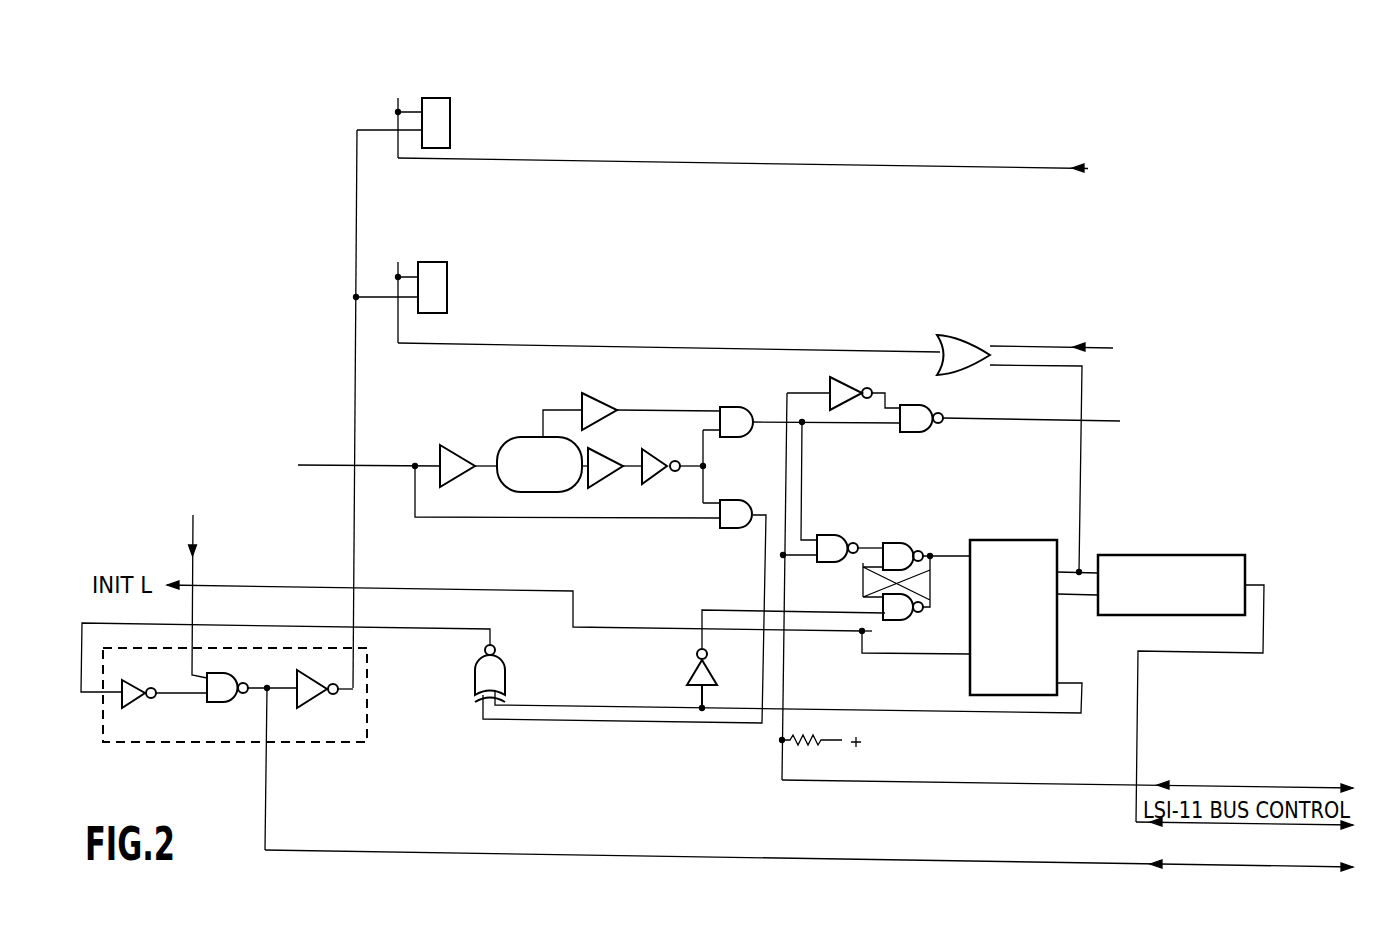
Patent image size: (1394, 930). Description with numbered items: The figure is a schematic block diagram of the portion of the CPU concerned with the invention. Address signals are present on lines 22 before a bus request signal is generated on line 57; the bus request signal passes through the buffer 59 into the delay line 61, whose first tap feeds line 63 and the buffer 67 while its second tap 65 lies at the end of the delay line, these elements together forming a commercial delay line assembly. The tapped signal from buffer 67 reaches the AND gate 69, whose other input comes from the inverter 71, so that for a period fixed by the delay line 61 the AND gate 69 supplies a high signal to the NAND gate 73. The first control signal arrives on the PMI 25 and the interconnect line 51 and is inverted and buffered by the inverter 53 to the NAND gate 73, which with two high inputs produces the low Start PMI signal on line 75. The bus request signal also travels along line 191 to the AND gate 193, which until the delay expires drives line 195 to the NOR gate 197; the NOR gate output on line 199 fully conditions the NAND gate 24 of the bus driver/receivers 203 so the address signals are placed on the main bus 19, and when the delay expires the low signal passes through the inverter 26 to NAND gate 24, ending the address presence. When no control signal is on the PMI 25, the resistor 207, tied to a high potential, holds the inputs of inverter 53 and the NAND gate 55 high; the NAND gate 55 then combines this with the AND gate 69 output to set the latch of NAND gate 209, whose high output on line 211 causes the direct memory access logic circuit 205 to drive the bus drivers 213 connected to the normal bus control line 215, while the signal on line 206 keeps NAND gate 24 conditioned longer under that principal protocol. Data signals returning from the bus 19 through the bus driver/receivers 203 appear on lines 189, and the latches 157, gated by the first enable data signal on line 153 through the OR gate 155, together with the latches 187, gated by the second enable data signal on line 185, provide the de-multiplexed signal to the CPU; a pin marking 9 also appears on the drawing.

The latches 187 is at (450, 131).
The latches 157 is at (447, 303).
The lines 189 is at (355, 235).
The line 185 is at (963, 168).
The OR gate 155 is at (950, 350).
The line 153 is at (1097, 347).
The line 57 is at (318, 463).
The lines 22 is at (193, 548).
The buffer 59 is at (452, 445).
The delay line 61 is at (525, 437).
The line 63 is at (560, 410).
The buffer 67 is at (612, 400).
The second tap 65 is at (586, 478).
The inverter 71 is at (662, 482).
The line 191 is at (495, 520).
The AND gate 69 is at (745, 437).
The AND gate 193 is at (728, 528).
The interconnect line 51 is at (786, 670).
The inverter 53 is at (830, 380).
The NAND gate 73 is at (918, 430).
The line 75 is at (1053, 421).
The NAND gate 55 is at (832, 540).
The NAND gate latch 209 is at (910, 543).
The line 211 is at (963, 540).
The direct memory access logic circuit 205 is at (1057, 660).
The bus drivers 213 is at (1170, 555).
The normal bus control line 215 is at (1138, 697).
The PMI 25 is at (997, 780).
The main bus 19 is at (968, 862).
The resistor 207 is at (813, 745).
The line 206 is at (917, 713).
The line 195 is at (764, 587).
The pin 9 line 9 is at (874, 631).
The NOR gate 197 is at (480, 695).
The line 199 is at (390, 632).
The bus driver/receivers 203 is at (305, 727).
The inverter 26 is at (143, 700).
The NAND gate 24 is at (205, 686).